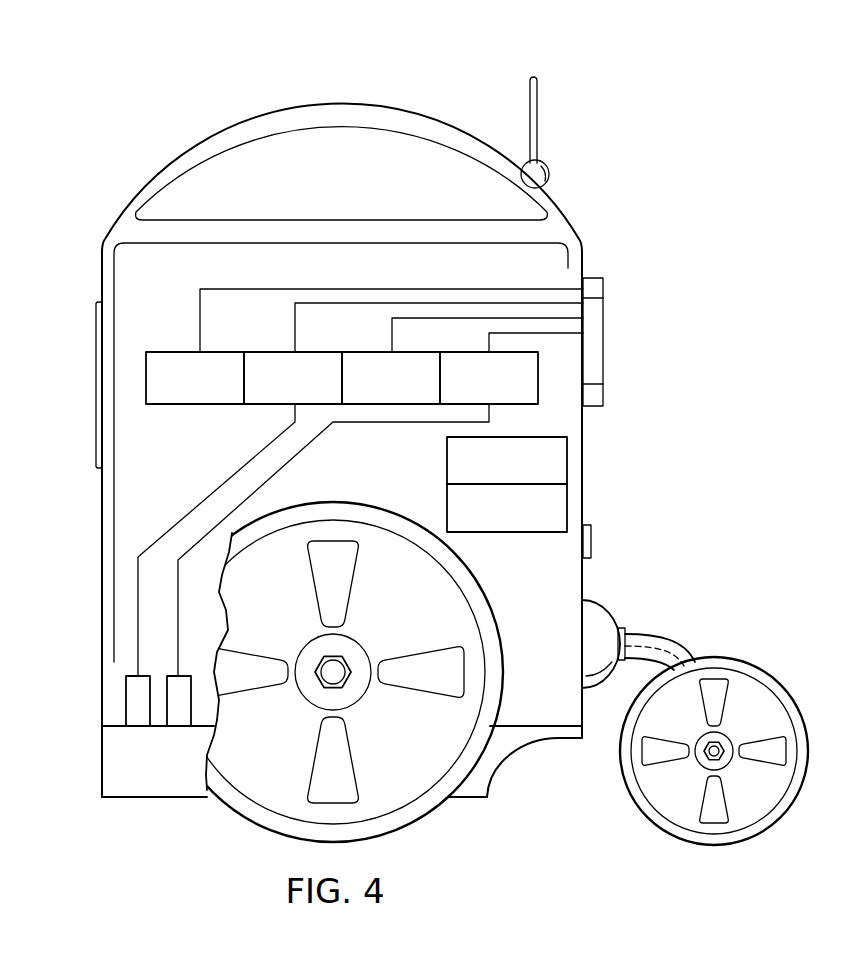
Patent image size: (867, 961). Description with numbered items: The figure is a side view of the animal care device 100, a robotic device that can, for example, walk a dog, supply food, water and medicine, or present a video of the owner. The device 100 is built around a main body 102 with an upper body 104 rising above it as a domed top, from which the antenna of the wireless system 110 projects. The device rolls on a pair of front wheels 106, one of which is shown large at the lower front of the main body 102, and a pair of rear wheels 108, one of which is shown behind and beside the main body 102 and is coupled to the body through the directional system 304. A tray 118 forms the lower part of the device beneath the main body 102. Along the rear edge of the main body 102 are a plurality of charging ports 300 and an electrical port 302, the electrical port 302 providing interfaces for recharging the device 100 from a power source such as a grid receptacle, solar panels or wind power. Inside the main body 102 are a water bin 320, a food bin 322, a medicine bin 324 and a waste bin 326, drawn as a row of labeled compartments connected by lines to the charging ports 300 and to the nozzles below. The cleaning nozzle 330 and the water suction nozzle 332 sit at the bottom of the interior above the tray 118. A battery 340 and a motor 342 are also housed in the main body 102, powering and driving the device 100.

The animal care device 100 is at (231, 68).
The main body 102 is at (102, 505).
The upper body 104 is at (160, 170).
The front wheels 106 is at (247, 823).
The rear wheels 108 is at (720, 846).
The wireless system 110 is at (537, 120).
The tray 118 is at (102, 765).
The charging ports 300 is at (603, 345).
The electrical port 302 is at (591, 540).
The directional system 304 is at (612, 605).
The water bin 320 is at (173, 393).
The food bin 322 is at (271, 393).
The medicine bin 324 is at (368, 393).
The waste bin 326 is at (466, 393).
The cleaning nozzle 330 is at (126, 700).
The water suction nozzle 332 is at (166, 710).
The battery 340 is at (447, 460).
The motor 342 is at (447, 508).